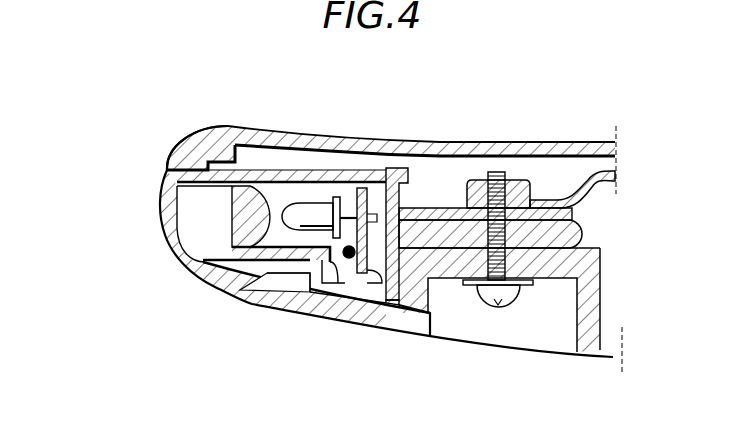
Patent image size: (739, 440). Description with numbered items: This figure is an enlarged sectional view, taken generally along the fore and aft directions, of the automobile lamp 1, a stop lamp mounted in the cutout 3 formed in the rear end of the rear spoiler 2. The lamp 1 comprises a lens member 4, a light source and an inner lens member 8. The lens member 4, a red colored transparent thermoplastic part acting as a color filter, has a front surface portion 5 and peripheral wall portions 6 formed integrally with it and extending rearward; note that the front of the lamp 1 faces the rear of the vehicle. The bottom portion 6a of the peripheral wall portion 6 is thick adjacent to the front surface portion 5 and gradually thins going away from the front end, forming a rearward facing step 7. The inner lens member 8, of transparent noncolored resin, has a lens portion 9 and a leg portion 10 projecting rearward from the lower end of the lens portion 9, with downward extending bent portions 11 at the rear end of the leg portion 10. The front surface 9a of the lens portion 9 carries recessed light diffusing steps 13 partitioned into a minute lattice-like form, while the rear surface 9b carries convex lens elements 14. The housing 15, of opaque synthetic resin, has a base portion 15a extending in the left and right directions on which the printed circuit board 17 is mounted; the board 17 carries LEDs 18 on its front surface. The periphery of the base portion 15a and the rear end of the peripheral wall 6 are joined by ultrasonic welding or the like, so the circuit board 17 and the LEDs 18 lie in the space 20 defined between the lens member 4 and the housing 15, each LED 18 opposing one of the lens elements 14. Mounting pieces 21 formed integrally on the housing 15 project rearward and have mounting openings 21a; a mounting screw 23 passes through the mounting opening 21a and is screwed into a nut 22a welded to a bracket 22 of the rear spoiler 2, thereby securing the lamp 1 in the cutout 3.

The automobile lamp 1 is at (140, 116).
The rear spoiler 2 is at (418, 138).
The cutout 3 is at (167, 172).
The lens member 4 is at (176, 248).
The front surface portion 5 is at (167, 218).
The peripheral wall portion 6 is at (308, 170).
The bottom portion of peripheral wall portion 6a is at (248, 298).
The rearward facing step 7 is at (333, 300).
The inner lens member 8 is at (218, 286).
The lens portion 9 is at (256, 200).
The front surface of lens portion 9a is at (206, 166).
The rear surface of lens portion 9b is at (280, 205).
The leg portion 10 is at (280, 280).
The bent portion 11 is at (348, 300).
The recessed light diffusing step 13 is at (205, 232).
The lens element 14 is at (258, 226).
The housing 15 is at (401, 182).
The base portion 15a is at (403, 329).
The printed circuit board 17 is at (382, 318).
The LED 18 is at (312, 290).
The space 20 is at (192, 220).
The mounting piece 21 is at (590, 237).
The mounting opening 21a is at (460, 280).
The bracket 22 is at (570, 195).
The nut 22a is at (520, 182).
The mounting screw 23 is at (507, 307).